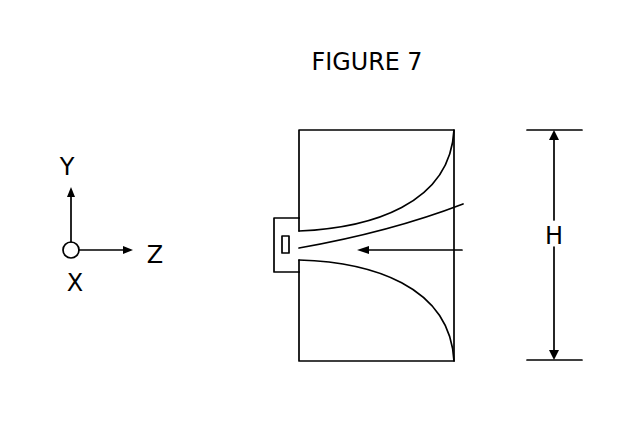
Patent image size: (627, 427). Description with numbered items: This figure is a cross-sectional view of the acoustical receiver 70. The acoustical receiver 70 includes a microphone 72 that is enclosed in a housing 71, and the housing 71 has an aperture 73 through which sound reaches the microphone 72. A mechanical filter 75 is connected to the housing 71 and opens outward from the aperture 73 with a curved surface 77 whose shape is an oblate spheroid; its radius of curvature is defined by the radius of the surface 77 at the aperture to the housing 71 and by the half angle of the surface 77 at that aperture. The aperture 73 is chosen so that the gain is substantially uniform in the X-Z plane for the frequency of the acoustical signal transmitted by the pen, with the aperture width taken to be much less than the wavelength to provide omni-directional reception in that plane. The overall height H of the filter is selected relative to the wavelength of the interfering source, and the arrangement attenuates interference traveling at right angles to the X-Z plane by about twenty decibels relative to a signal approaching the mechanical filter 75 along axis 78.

The acoustical receiver 70 is at (178, 120).
The housing 71 is at (288, 272).
The microphone 72 is at (285, 242).
The aperture 73 is at (399, 217).
The mechanical filter 75 is at (356, 357).
The curved surface 77 is at (433, 186).
The axis 78 is at (425, 250).